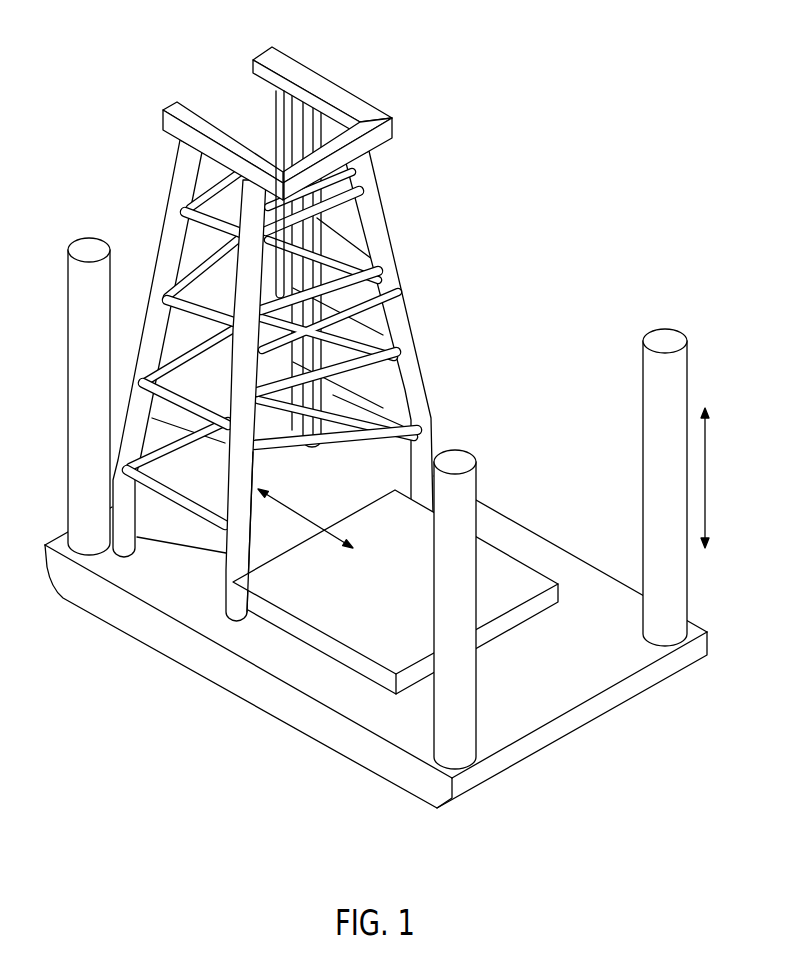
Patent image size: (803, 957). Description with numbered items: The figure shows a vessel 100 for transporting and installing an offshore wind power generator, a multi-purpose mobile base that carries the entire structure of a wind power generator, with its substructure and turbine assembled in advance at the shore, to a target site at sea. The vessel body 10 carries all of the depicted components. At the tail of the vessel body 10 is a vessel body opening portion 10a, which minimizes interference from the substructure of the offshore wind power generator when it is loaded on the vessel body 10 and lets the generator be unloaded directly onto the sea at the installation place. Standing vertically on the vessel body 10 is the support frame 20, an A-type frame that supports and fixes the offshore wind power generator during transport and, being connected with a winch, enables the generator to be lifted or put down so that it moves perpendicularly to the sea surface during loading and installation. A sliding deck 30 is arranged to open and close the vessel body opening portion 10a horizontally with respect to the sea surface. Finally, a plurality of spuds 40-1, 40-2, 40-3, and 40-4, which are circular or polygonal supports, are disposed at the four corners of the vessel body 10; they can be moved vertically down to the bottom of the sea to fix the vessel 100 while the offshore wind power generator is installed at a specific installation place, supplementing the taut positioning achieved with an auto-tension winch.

The vessel 100 is at (371, 436).
The vessel body 10 is at (376, 671).
The vessel body opening portion 10a is at (186, 522).
The support frame 20 is at (415, 375).
The sliding deck 30 is at (382, 647).
The spud 40-1 is at (660, 340).
The spud 40-2 is at (462, 463).
The spud 40-3 is at (88, 250).
The spud 40-4 is at (305, 122).